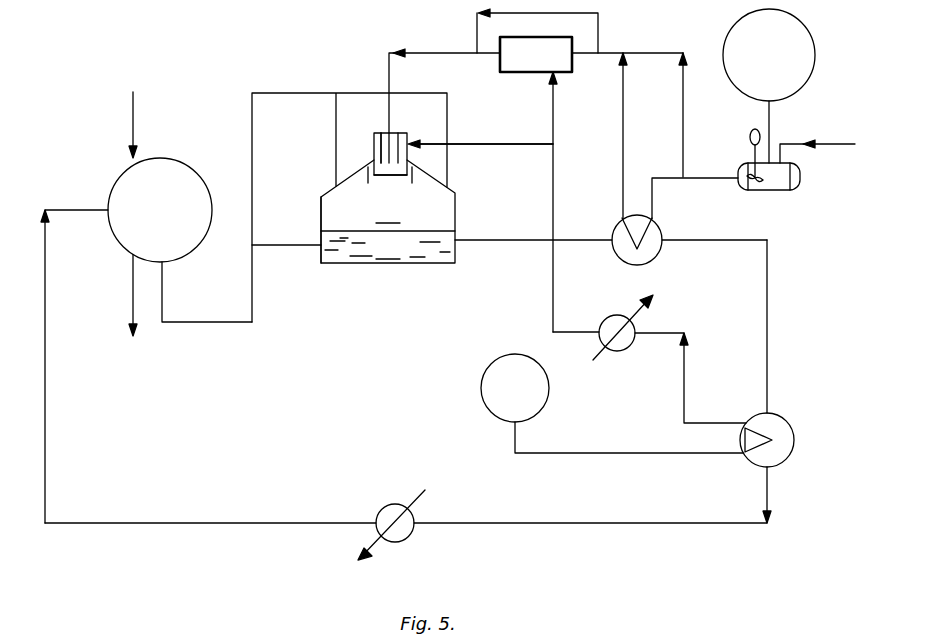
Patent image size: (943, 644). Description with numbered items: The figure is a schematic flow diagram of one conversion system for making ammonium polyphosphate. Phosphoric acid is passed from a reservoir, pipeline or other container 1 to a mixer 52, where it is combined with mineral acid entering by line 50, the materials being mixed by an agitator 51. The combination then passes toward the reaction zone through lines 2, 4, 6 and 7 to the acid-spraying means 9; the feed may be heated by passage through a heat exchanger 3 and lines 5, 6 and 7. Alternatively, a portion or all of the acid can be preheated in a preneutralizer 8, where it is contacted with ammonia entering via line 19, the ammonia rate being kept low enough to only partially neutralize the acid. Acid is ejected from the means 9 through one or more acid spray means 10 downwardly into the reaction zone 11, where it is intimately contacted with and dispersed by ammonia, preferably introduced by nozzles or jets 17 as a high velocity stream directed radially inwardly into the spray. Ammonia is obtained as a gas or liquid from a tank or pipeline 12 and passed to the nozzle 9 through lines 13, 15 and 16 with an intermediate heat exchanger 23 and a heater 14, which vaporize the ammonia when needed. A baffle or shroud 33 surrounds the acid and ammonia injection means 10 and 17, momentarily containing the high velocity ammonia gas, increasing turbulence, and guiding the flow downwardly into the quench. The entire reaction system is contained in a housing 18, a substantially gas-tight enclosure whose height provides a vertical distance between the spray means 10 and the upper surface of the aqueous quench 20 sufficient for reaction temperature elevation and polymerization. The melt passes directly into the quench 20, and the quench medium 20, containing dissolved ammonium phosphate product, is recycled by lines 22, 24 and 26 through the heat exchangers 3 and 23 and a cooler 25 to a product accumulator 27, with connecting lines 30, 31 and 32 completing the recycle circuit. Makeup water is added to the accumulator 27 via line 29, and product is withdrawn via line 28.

The container 1 is at (815, 58).
The line 2 is at (715, 178).
The heat exchanger 3 is at (618, 262).
The line 4 is at (683, 122).
The line 5 is at (620, 172).
The line 6 is at (598, 18).
The line 7 is at (387, 65).
The preneutralizer 8 is at (522, 72).
The acid-spraying means 9 is at (372, 140).
The acid spray means 10 is at (397, 140).
The reaction zone 11 is at (388, 211).
The tank or pipeline 12 is at (481, 392).
The line 13 is at (620, 453).
The heater 14 is at (627, 351).
The line 15 is at (553, 293).
The line 16 is at (512, 146).
The ammonia jets 17 is at (375, 175).
The housing 18 is at (321, 210).
The line 19 is at (553, 113).
The aqueous quench 20 is at (388, 245).
The line 22 is at (767, 318).
The heat exchanger 23 is at (795, 435).
The line 24 is at (670, 523).
The cooler 25 is at (405, 540).
The line 26 is at (45, 400).
The product accumulator 27 is at (200, 165).
The line 28 is at (130, 300).
The line 29 is at (130, 110).
The line 30 is at (230, 322).
The line 31 is at (305, 245).
The line 32 is at (252, 125).
The baffle 33 is at (414, 180).
The line 50 is at (830, 144).
The agitator 51 is at (748, 138).
The mixer 52 is at (790, 190).